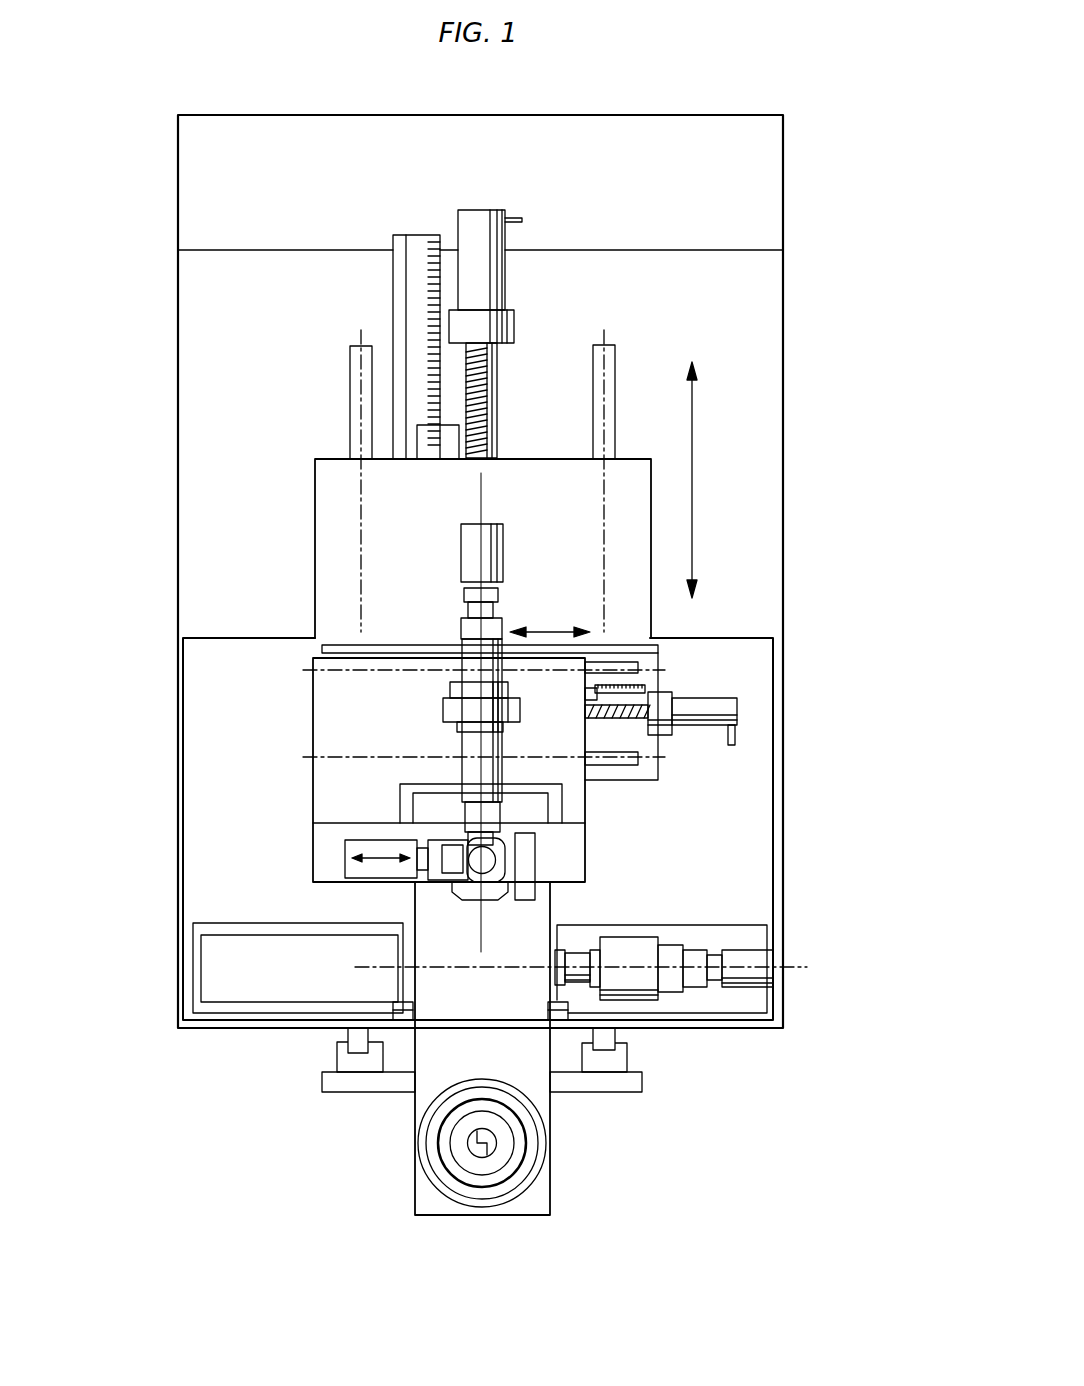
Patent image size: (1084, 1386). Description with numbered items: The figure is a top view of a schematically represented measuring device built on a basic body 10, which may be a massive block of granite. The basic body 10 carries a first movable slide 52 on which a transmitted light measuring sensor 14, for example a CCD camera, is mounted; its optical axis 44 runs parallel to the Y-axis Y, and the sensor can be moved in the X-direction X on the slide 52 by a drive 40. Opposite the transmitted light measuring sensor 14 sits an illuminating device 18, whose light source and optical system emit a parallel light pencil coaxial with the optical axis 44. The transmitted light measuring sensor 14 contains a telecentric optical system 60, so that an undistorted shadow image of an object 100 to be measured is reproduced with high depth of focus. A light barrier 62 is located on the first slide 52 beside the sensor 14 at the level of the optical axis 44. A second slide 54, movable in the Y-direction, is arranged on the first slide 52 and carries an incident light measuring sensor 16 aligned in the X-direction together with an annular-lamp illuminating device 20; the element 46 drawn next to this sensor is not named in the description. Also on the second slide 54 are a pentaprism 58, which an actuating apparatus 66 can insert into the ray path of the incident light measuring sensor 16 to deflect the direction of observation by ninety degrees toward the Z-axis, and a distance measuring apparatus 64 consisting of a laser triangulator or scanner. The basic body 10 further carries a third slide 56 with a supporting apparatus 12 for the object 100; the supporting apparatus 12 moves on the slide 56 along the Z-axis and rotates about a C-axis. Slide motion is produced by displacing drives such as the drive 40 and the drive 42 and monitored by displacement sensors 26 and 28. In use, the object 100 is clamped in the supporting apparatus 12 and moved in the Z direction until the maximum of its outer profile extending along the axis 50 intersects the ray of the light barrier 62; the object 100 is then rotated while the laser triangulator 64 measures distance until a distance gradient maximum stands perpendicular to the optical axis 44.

The basic body 10 is at (775, 427).
The supporting apparatus 12 is at (528, 1165).
The transmitted light measuring sensor 14 is at (753, 980).
The incident light measuring sensor 16 is at (488, 528).
The illuminating device 18 is at (260, 990).
The illuminating device 20 is at (450, 708).
The displacement sensor 26 is at (425, 433).
The displacement sensor 28 is at (598, 690).
The drive 40 is at (505, 282).
The displacing drive 42 is at (730, 710).
The optical axis 44 is at (788, 968).
The tool holder head 46 is at (482, 552).
The axis 50 is at (482, 1158).
The first slide 52 is at (750, 800).
The second slide 54 is at (575, 803).
The third slide 56 is at (598, 1088).
The pentaprism 58 is at (453, 863).
The telecentric optical system 60 is at (628, 992).
The light barrier 62 is at (415, 1008).
The distance measuring apparatus 64 is at (527, 862).
The actuating apparatus 66 is at (360, 847).
The object 100 is at (485, 1152).
The X-direction X is at (692, 490).
The Y-axis Y is at (550, 632).